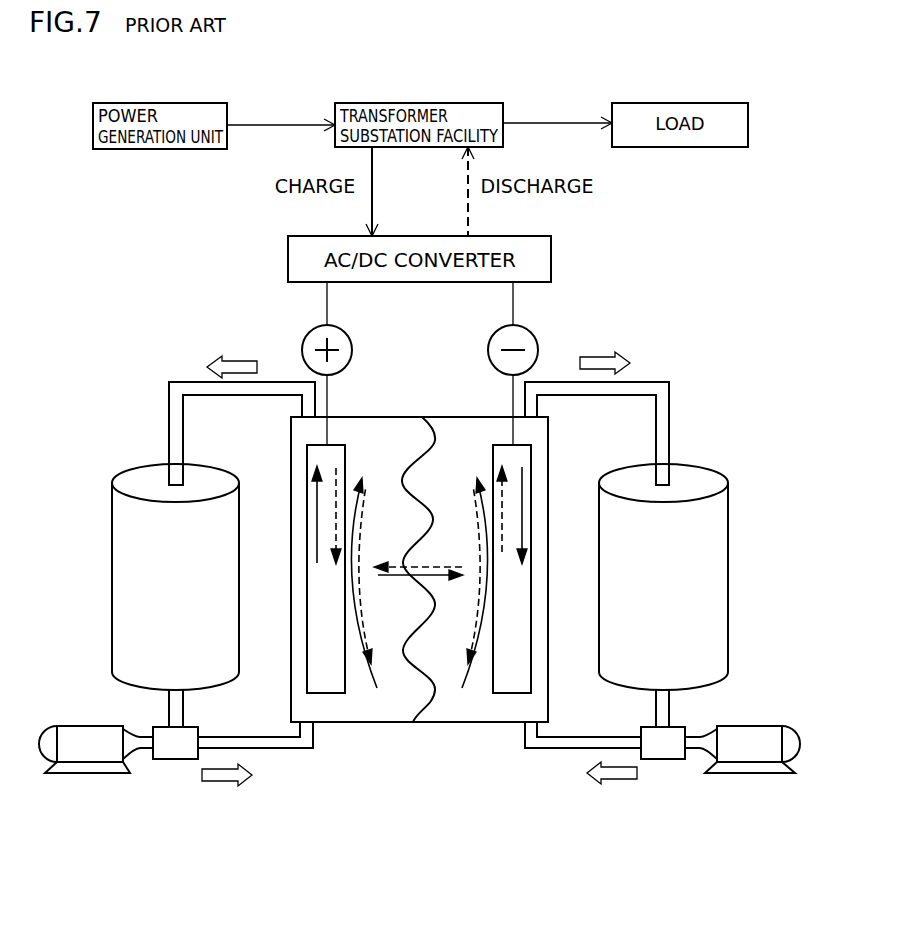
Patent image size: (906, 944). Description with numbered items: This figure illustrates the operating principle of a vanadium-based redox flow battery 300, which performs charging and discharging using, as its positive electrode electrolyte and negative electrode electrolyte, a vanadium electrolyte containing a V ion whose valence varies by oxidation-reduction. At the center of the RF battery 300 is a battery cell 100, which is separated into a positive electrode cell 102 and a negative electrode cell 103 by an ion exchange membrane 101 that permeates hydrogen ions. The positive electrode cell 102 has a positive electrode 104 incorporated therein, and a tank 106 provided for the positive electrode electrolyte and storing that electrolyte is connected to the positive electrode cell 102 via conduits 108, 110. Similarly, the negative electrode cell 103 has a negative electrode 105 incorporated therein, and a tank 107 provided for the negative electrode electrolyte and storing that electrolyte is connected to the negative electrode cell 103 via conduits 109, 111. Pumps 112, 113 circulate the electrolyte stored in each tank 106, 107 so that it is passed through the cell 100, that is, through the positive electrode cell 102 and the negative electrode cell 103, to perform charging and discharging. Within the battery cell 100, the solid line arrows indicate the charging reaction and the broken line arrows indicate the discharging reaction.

The battery cell 100 is at (388, 409).
The ion exchange membrane 101 is at (413, 722).
The positive electrode cell 102 is at (355, 723).
The negative electrode cell 103 is at (482, 723).
The positive electrode 104 is at (305, 682).
The negative electrode 105 is at (535, 681).
The tank 106 is at (130, 470).
The tank 107 is at (710, 472).
The conduit 108 is at (277, 750).
The conduit 109 is at (560, 748).
The conduit 110 is at (187, 382).
The conduit 111 is at (653, 378).
The pump 112 is at (72, 722).
The pump 113 is at (765, 722).
The vanadium-based RF battery 300 is at (333, 820).